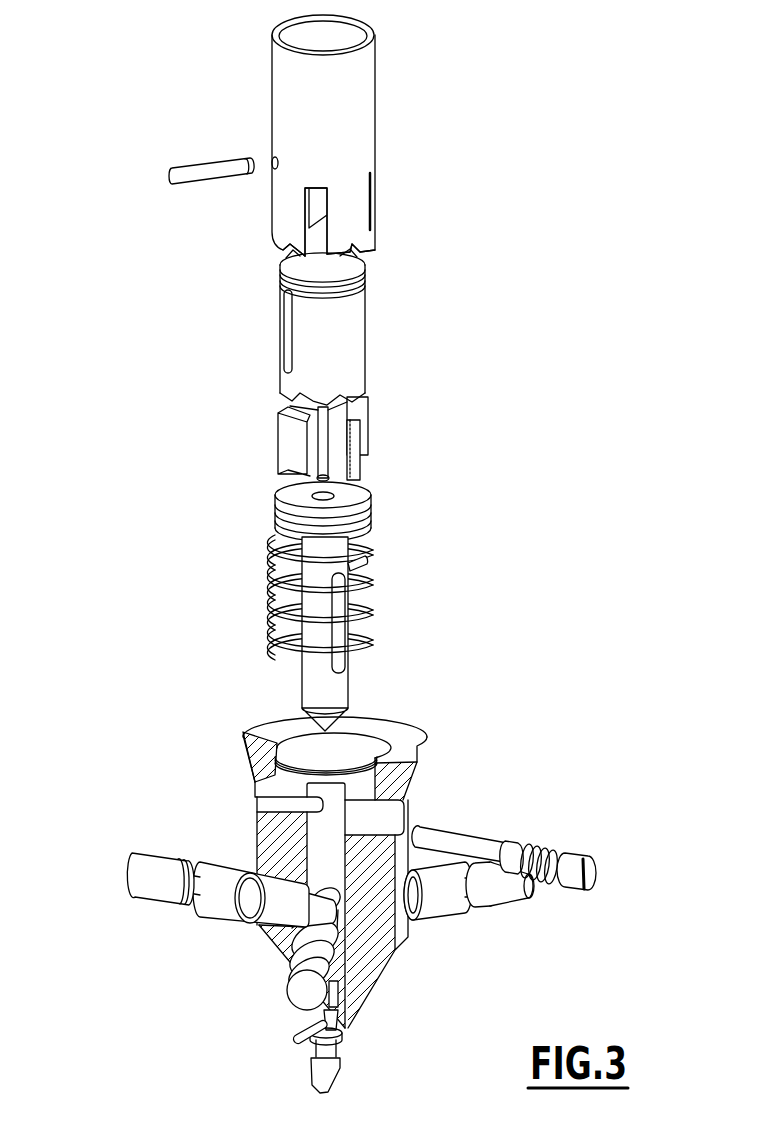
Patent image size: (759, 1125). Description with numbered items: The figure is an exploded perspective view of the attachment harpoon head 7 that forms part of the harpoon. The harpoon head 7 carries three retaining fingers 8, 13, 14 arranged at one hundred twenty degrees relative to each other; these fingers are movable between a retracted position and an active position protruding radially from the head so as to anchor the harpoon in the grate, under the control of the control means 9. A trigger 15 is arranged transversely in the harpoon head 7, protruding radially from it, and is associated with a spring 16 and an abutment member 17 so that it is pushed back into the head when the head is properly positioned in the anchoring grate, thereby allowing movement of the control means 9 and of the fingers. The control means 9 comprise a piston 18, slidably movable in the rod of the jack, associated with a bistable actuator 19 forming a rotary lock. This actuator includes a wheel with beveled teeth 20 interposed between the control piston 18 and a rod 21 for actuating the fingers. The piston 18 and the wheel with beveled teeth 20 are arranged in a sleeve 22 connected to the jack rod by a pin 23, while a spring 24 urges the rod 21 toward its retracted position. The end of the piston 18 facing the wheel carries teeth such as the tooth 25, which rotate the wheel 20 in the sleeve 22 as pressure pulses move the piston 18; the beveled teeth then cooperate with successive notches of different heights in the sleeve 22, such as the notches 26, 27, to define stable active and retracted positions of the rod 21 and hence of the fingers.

The harpoon head 7 is at (180, 958).
The retaining finger 8 is at (487, 923).
The control means 9 is at (310, 606).
The retaining finger 13 is at (123, 895).
The retaining finger 14 is at (275, 1003).
The trigger 15 is at (475, 825).
The spring 16 is at (552, 845).
The abutment member 17 is at (602, 868).
The piston 18 is at (362, 327).
The bistable actuator 19 is at (314, 365).
The wheel with beveled teeth 20 is at (385, 435).
The rod for actuating the fingers 21 is at (353, 567).
The sleeve 22 is at (383, 172).
The pin 23 is at (188, 157).
The spring 24 is at (380, 605).
The tooth 25 is at (377, 387).
The notch 26 is at (322, 180).
The notch 27 is at (370, 248).